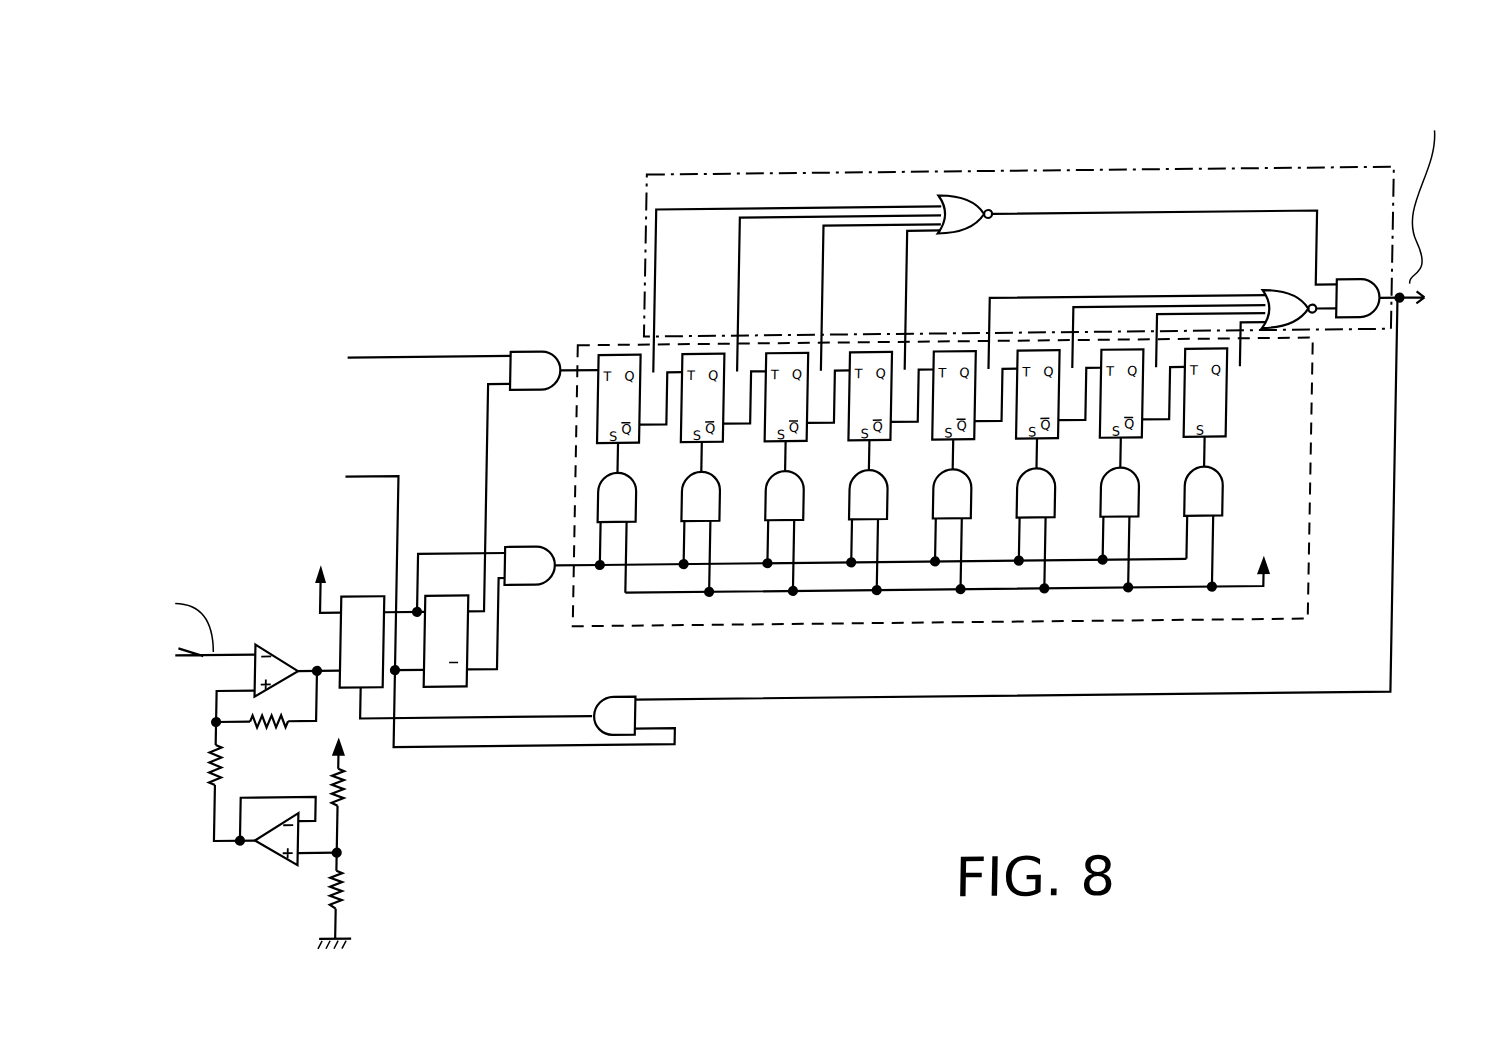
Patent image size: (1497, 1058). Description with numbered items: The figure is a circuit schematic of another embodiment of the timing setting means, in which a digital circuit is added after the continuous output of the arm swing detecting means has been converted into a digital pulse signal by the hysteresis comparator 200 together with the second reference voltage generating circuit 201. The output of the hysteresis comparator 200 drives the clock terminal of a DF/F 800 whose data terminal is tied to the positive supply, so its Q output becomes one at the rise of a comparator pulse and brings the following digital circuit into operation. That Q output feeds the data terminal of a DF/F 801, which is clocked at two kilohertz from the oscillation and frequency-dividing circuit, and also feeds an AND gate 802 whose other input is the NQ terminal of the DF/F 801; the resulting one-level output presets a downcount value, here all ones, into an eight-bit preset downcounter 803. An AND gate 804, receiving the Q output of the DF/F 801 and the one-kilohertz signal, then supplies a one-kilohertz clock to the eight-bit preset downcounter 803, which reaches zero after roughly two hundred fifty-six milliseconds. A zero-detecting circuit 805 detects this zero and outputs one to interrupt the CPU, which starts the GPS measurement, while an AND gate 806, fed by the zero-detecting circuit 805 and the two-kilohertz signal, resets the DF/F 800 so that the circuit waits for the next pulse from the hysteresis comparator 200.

The hysteresis comparator 200 is at (266, 636).
The second reference voltage generating circuit 201 is at (276, 847).
The DF/F 800 is at (364, 594).
The DF/F 801 is at (470, 689).
The AND gate 802 is at (513, 546).
The 8-bit preset downcounter 803 is at (1312, 508).
The AND gate 804 is at (519, 350).
The 0-detecting circuit 805 is at (1019, 173).
The AND gate 806 is at (623, 697).